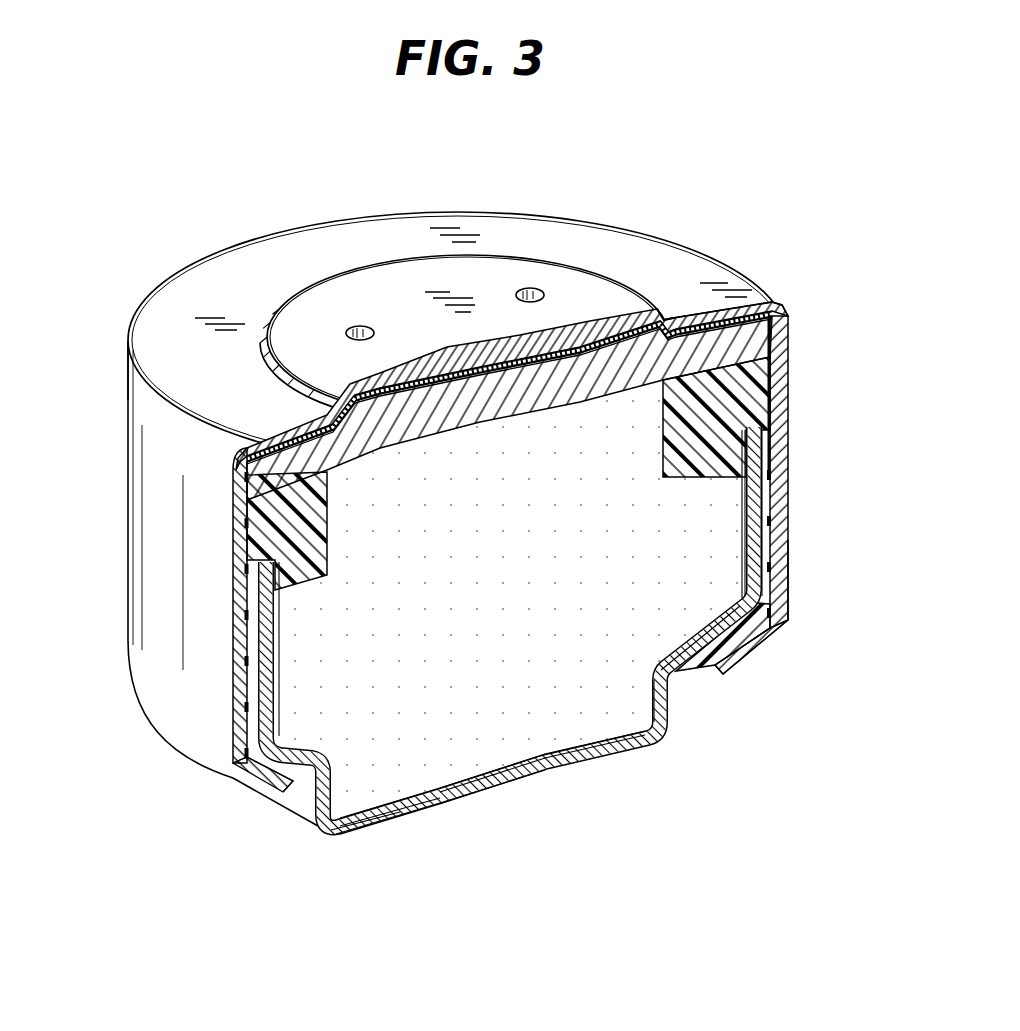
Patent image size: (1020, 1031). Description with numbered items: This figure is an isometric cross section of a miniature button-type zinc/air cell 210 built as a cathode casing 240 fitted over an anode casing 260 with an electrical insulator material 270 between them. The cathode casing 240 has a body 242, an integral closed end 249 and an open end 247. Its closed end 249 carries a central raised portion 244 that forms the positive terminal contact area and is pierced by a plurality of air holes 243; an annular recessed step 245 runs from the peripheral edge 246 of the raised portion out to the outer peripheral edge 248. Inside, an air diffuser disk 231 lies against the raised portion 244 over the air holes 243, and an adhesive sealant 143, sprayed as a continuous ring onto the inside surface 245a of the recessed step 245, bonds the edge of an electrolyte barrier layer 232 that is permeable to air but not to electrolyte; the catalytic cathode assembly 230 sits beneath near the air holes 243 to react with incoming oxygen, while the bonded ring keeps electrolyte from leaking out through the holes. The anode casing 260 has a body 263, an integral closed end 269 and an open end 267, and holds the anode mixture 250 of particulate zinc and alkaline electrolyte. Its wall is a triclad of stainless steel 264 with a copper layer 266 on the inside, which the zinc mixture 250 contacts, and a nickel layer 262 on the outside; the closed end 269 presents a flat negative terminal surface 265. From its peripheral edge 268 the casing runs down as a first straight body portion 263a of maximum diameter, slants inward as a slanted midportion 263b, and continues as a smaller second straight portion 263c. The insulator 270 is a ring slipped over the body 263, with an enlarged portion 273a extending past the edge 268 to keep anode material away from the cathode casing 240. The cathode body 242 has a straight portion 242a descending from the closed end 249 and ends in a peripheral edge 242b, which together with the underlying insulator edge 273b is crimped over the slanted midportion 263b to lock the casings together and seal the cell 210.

The zinc/air cell 210 is at (236, 208).
The peripheral edge of the raised terminal portion 246 is at (313, 290).
The air holes 243 is at (361, 329).
The raised portion 244 is at (480, 272).
The annular recessed step 245 is at (622, 247).
The cathode casing 240 is at (663, 256).
The air diffuser disk 231 is at (664, 317).
The inside surface of recessed annular step 245a is at (746, 316).
The adhesive sealant 143 is at (771, 313).
The electrolyte barrier layer 232 is at (771, 326).
The catalytic cathode assembly 230 is at (758, 347).
The enlarged portion of insulator ring 273a is at (743, 386).
The peripheral edge of the anode casing 268 is at (758, 438).
The body of cathode casing 242 is at (788, 464).
The electrical insulator material 270 is at (765, 487).
The first straight body portion 263a is at (750, 520).
The straight portion of cathode casing body 242a is at (788, 574).
The peripheral edge of insulator ring 273b is at (748, 628).
The peripheral edge of cathode casing 242b is at (750, 658).
The slanted midportion 263b is at (683, 672).
The second straight portion 263c is at (673, 704).
The anode casing 260 is at (672, 744).
The anode mixture 250 is at (588, 715).
The nickel layer 262 is at (578, 768).
The stainless steel 264 is at (518, 768).
The negative terminal surface 265 is at (450, 801).
The copper layer 266 is at (373, 814).
The closed end of anode casing 269 is at (404, 818).
The open end of cathode casing 247 is at (292, 792).
The body of anode casing 263 is at (264, 650).
The open end of anode casing 267 is at (250, 554).
The outer peripheral edge 248 is at (127, 346).
The closed end of cathode casing 249 is at (190, 283).